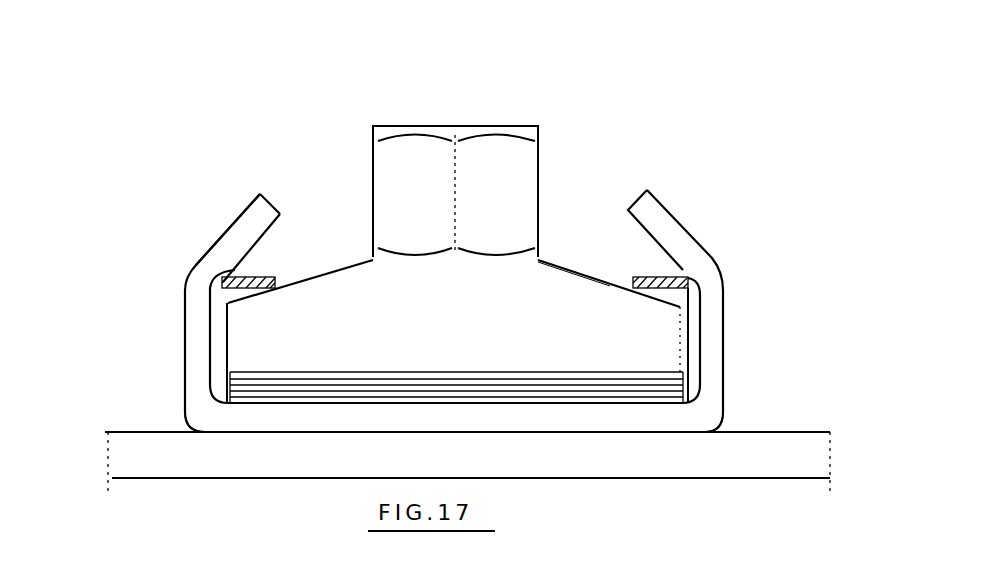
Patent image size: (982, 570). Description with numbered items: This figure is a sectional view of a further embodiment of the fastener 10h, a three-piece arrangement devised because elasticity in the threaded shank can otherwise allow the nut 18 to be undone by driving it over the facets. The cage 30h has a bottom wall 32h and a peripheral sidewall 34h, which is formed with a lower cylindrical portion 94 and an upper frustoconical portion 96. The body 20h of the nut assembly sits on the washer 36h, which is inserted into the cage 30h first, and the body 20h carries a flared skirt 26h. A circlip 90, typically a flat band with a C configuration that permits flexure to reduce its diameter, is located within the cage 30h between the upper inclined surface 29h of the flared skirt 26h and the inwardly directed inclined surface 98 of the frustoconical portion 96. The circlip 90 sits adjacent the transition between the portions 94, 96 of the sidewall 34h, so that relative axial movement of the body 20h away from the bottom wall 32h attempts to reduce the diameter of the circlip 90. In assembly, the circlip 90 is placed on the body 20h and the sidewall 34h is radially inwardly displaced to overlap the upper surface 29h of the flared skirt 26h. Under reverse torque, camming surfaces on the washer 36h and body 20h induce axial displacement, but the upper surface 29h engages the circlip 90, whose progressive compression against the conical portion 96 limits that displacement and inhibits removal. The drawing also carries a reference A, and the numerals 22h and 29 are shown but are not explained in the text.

The fastener 10h is at (523, 102).
The body 20h is at (403, 126).
The lens side wall 22h is at (540, 183).
The nut 18 is at (797, 133).
The lower cylindrical portion 94 is at (185, 388).
The peripheral sidewall 34h is at (221, 253).
The upper frustoconical portion 96 is at (243, 212).
The circlip 90 is at (232, 262).
The upper inclined surface 29h is at (323, 292).
The reflector wall 29 is at (603, 285).
The inwardly directed inclined surface 98 is at (633, 227).
The flared skirt 26h is at (272, 349).
The washer 36h is at (678, 378).
The bottom wall 32h is at (620, 418).
The cage 30h is at (740, 398).
The reference plane A is at (145, 460).